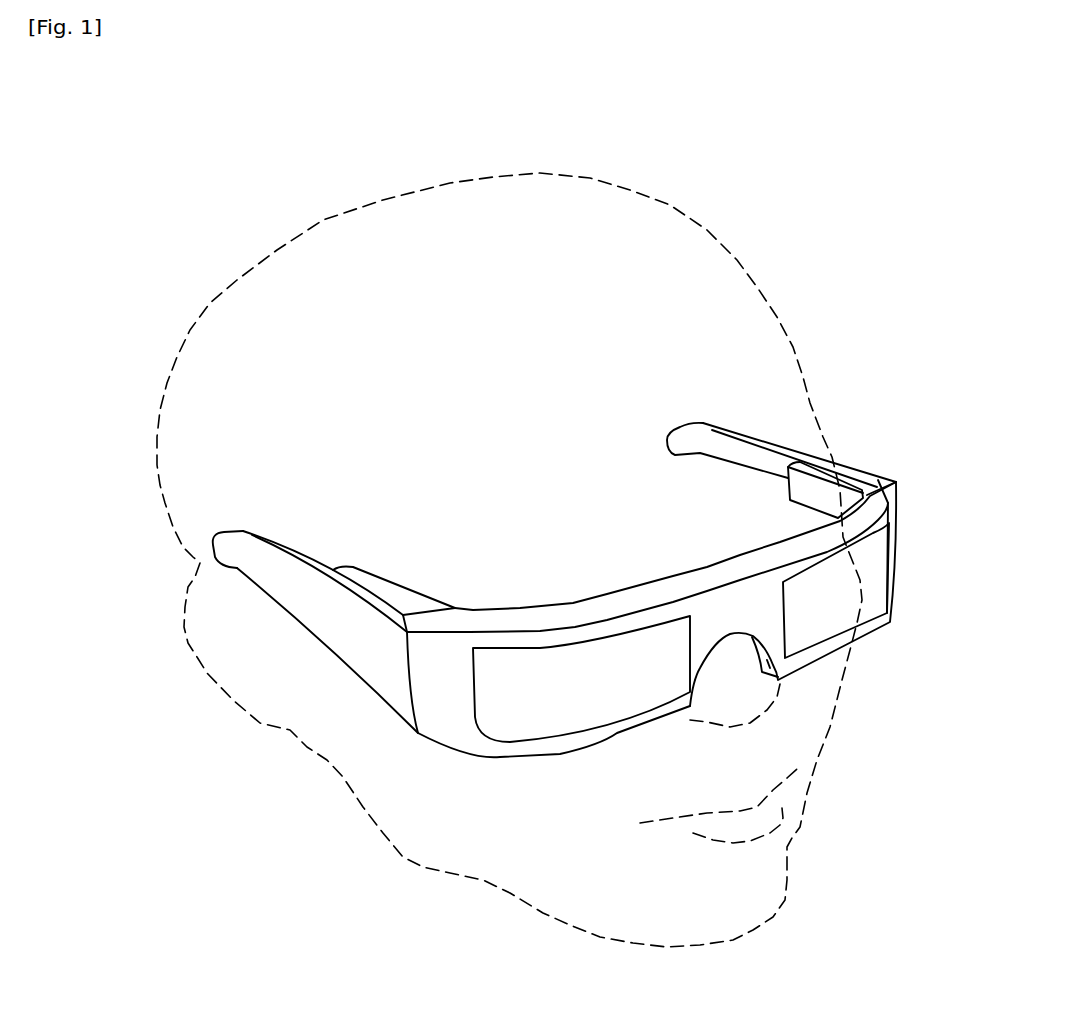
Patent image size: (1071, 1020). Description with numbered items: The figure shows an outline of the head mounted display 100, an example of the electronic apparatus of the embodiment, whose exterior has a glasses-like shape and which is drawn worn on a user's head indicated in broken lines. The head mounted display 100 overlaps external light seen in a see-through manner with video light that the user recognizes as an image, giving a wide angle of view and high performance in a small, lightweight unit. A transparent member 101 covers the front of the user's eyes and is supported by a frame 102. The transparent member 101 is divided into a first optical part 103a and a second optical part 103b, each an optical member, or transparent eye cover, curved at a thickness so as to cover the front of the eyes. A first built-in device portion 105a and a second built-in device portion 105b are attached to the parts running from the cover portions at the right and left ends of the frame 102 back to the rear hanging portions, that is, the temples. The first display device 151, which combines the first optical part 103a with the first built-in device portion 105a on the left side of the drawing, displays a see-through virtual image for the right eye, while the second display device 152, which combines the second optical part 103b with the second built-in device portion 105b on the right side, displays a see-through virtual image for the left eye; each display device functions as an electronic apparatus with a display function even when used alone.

The head mounted display 100 is at (900, 362).
The transparent member 101 is at (652, 687).
The frame 102 is at (723, 595).
The first optical part 103a is at (543, 715).
The second optical part 103b is at (827, 618).
The first built-in device portion 105a is at (390, 597).
The second built-in device portion 105b is at (813, 470).
The first display device 151 is at (478, 593).
The second display device 152 is at (867, 458).